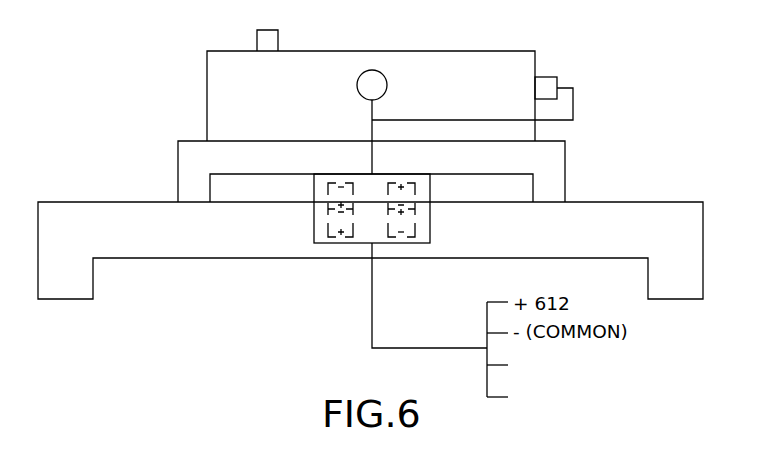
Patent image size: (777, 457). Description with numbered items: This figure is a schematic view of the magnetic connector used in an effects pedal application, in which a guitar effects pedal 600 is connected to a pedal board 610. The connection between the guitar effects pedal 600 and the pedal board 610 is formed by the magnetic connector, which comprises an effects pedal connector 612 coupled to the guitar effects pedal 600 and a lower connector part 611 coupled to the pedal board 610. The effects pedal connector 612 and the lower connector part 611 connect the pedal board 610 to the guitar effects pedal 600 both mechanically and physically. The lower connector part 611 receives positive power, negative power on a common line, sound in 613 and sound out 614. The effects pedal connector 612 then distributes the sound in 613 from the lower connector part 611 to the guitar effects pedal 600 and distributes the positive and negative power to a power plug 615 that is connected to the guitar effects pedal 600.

The guitar effects pedal 600 is at (207, 83).
The pedal board 610 is at (80, 202).
The lower connector part 611 is at (430, 225).
The effects pedal connector 612 is at (430, 185).
The sound in 613 is at (517, 361).
The sound out 614 is at (517, 390).
The power plug 615 is at (558, 80).